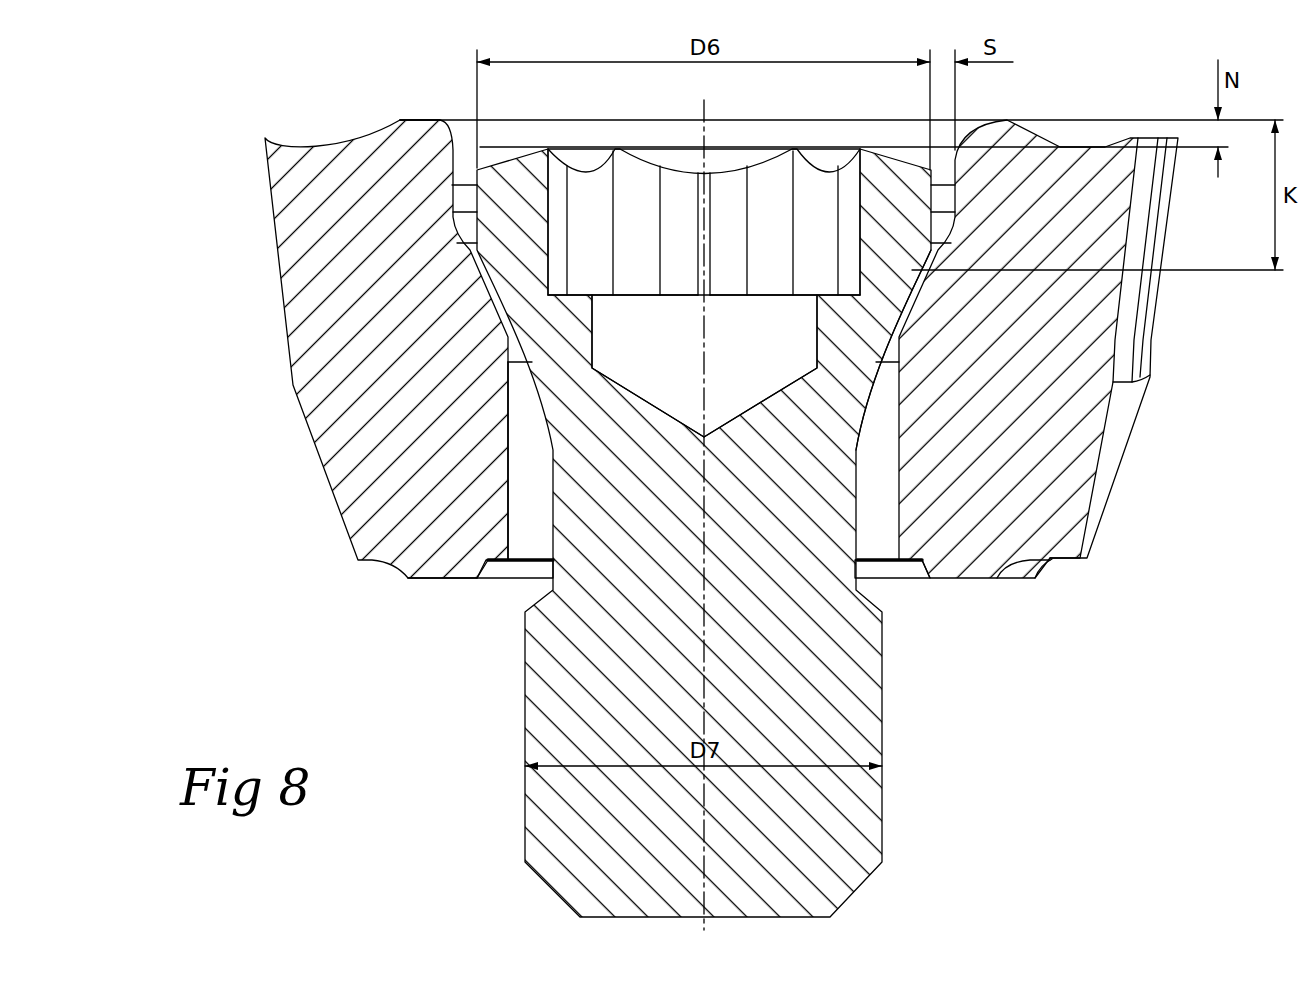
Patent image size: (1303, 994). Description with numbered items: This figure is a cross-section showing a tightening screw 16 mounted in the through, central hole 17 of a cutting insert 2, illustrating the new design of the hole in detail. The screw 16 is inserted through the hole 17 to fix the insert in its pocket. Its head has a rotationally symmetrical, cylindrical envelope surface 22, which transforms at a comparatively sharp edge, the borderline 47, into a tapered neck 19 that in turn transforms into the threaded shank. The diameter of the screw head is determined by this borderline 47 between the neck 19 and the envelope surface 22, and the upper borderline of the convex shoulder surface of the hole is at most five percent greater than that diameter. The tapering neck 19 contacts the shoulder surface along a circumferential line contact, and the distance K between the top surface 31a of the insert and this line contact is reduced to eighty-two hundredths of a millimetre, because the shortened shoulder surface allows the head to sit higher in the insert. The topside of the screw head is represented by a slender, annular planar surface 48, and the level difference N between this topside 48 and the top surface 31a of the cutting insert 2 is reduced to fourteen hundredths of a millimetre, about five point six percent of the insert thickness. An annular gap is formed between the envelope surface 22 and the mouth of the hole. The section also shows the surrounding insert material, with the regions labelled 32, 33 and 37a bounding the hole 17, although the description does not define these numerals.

The cutting insert 2 is at (1023, 378).
The tightening screw 16 is at (674, 496).
The central hole 17 is at (878, 548).
The tapered neck 19 is at (895, 325).
The envelope surface 22 is at (477, 200).
The top surface 31a is at (412, 120).
The lower surface of clamping part 32 is at (437, 578).
The clamping part 33 is at (409, 347).
The bore in clamping part 37a is at (527, 527).
The borderline 47 is at (922, 262).
The annular planar surface 48 is at (540, 147).